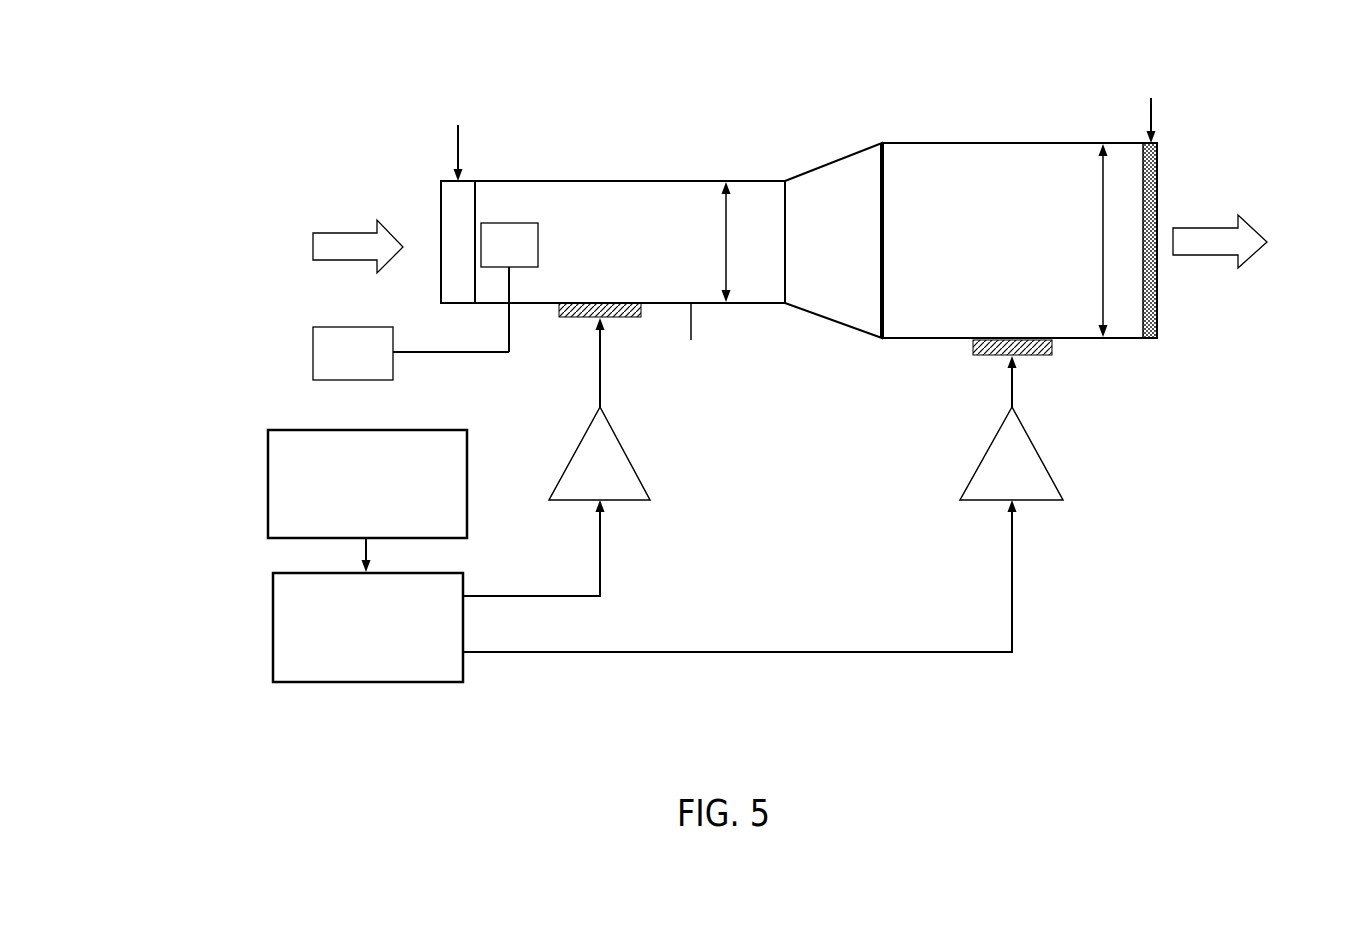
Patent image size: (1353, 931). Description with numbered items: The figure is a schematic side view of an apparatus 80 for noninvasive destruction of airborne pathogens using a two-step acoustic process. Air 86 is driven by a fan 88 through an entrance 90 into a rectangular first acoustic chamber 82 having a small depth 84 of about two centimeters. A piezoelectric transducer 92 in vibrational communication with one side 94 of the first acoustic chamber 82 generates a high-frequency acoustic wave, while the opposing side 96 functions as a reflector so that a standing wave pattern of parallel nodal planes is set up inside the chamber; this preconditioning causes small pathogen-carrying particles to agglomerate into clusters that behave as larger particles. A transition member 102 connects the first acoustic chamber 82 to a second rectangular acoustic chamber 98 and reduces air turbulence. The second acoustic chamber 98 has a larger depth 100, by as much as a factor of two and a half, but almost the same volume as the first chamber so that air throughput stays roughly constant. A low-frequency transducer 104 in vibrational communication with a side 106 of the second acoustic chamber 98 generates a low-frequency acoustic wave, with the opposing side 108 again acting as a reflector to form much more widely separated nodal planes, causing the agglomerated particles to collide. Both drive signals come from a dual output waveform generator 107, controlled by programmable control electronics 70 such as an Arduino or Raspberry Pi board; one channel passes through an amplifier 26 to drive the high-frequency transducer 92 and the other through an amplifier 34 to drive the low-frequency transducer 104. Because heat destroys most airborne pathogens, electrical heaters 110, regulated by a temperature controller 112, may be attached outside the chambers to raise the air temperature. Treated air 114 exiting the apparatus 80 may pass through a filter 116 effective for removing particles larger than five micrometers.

The apparatus 80 is at (735, 362).
The first acoustic chamber 82 is at (620, 266).
The depth 84 is at (725, 243).
The air 86 is at (311, 253).
The fan 88 is at (457, 129).
The entrance 90 is at (476, 181).
The piezoelectric transducer 92 is at (552, 322).
The side 94 is at (695, 342).
The opposing side 96 is at (607, 181).
The second acoustic chamber 98 is at (1010, 256).
The depth 100 is at (1100, 198).
The transition member 102 is at (857, 256).
The low-frequency transducer 104 is at (964, 361).
The side 106 is at (905, 338).
The opposing side 108 is at (957, 143).
The electrical heaters 110 is at (533, 261).
The temperature controller 112 is at (300, 348).
The air 114 is at (1197, 223).
The filter 116 is at (1186, 198).
The amplifier 26 is at (542, 486).
The amplifier 34 is at (956, 480).
The electronics 70 is at (258, 482).
The waveform generator 107 is at (258, 636).